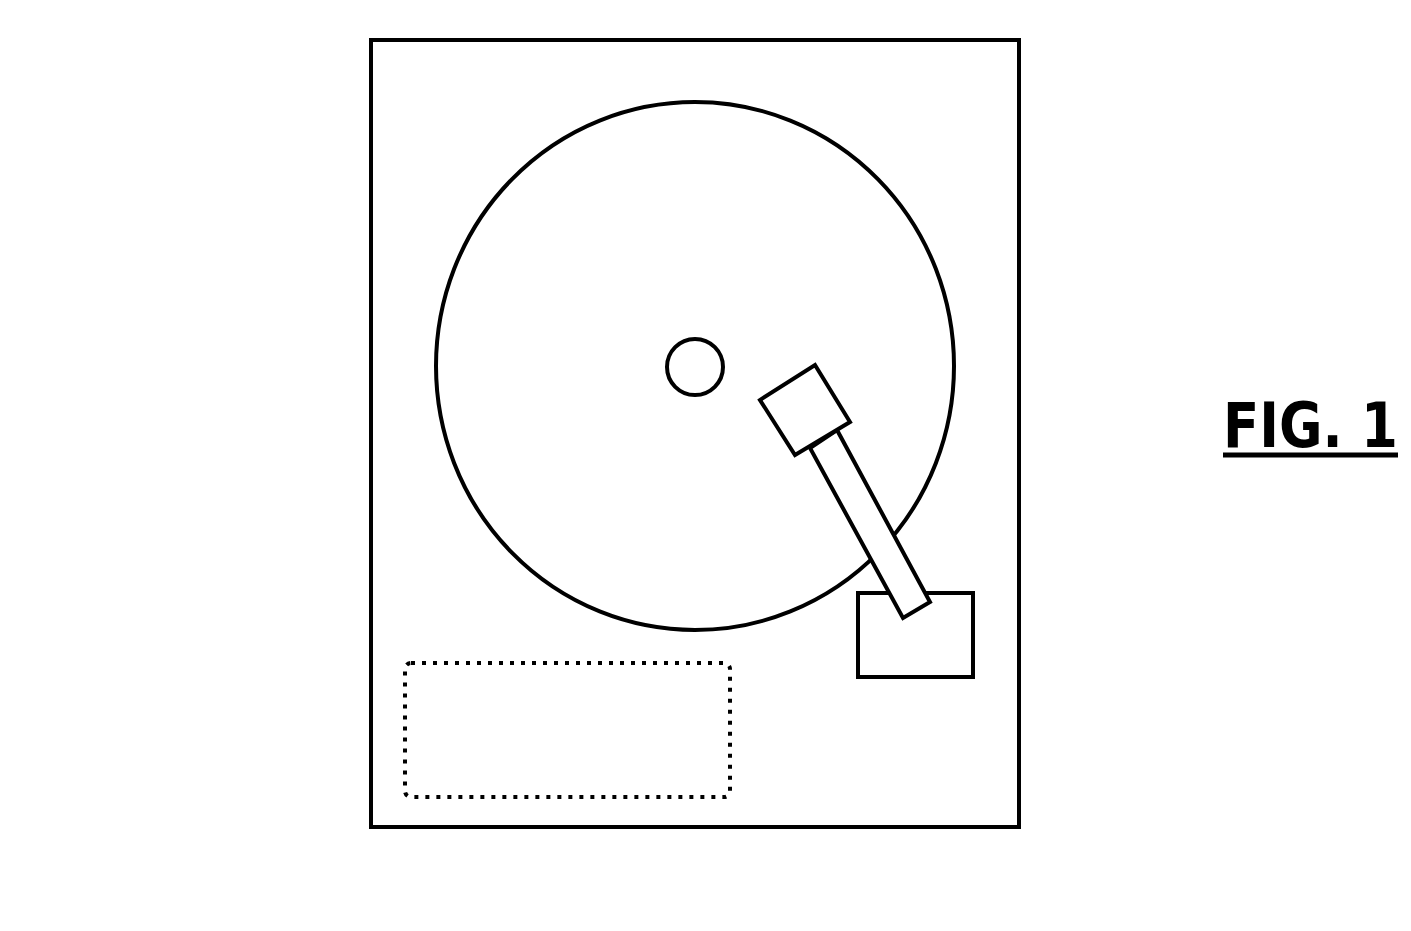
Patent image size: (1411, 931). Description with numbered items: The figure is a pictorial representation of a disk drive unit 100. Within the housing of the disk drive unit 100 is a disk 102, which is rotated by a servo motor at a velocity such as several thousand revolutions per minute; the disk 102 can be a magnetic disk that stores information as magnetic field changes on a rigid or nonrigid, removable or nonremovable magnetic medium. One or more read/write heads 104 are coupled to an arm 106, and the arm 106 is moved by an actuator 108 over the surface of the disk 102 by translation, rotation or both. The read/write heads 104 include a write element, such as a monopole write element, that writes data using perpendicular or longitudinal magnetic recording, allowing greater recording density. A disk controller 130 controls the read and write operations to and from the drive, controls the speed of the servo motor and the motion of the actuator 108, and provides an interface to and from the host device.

The disk drive unit 100 is at (298, 474).
The disk 102 is at (527, 162).
The read/write heads 104 is at (877, 406).
The arm 106 is at (878, 500).
The actuator 108 is at (858, 648).
The disk controller 130 is at (567, 730).